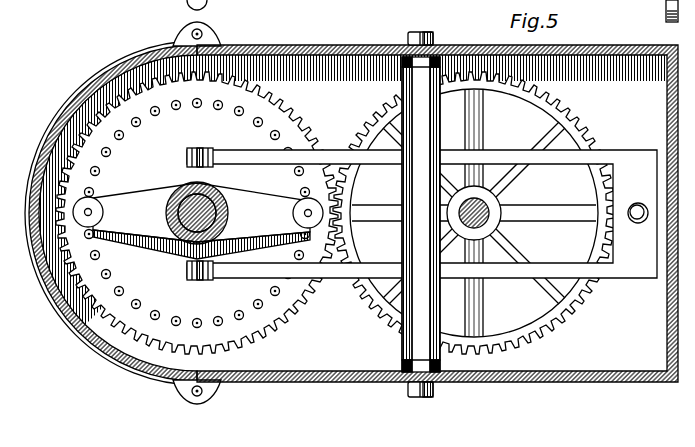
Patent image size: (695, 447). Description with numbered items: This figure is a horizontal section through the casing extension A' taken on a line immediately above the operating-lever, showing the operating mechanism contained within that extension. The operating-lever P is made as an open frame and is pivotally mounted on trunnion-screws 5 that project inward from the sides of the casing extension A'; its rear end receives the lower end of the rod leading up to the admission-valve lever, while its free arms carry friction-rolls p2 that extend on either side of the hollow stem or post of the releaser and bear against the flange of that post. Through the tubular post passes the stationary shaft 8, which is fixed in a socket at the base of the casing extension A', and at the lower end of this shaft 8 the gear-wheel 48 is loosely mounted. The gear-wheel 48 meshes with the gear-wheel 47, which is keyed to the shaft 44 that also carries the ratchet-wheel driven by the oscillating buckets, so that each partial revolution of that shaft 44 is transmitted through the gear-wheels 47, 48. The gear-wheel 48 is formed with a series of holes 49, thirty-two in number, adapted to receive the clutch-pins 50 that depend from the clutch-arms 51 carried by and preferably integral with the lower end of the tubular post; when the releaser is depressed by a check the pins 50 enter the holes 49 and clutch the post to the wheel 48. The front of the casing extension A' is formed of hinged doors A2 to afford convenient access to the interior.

The hinged doors A2 is at (72, 352).
The casing extension A' is at (437, 200).
The trunnion-screws 5 is at (431, 32).
The shaft 8 is at (221, 187).
The shaft 44 is at (488, 218).
The gear-wheel 47 is at (577, 303).
The gear-wheel 48 is at (282, 313).
The holes 49 is at (174, 109).
The clutch-pins 50 is at (90, 208).
The clutch-arms 51 is at (259, 192).
The operating-lever P is at (494, 150).
The friction-rolls p2 is at (172, 281).